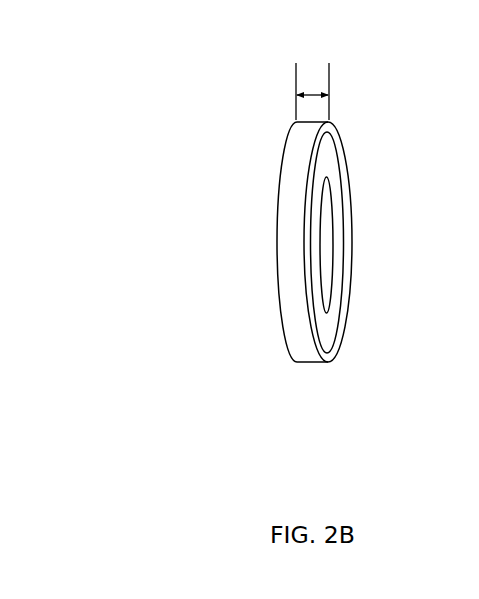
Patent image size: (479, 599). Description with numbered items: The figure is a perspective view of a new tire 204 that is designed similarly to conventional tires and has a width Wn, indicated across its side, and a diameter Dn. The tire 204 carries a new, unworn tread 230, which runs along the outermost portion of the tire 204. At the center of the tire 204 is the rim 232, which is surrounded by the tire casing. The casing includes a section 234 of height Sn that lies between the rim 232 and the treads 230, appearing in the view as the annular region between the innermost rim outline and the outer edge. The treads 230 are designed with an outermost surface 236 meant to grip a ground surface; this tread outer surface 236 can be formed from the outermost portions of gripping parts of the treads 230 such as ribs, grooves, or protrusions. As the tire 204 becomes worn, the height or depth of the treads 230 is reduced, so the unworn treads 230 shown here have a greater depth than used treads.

The new tire 204 is at (200, 92).
The tread 230 is at (325, 360).
The rim 232 is at (328, 255).
The casing section 234 is at (325, 159).
The tread outer surface 236 is at (297, 330).